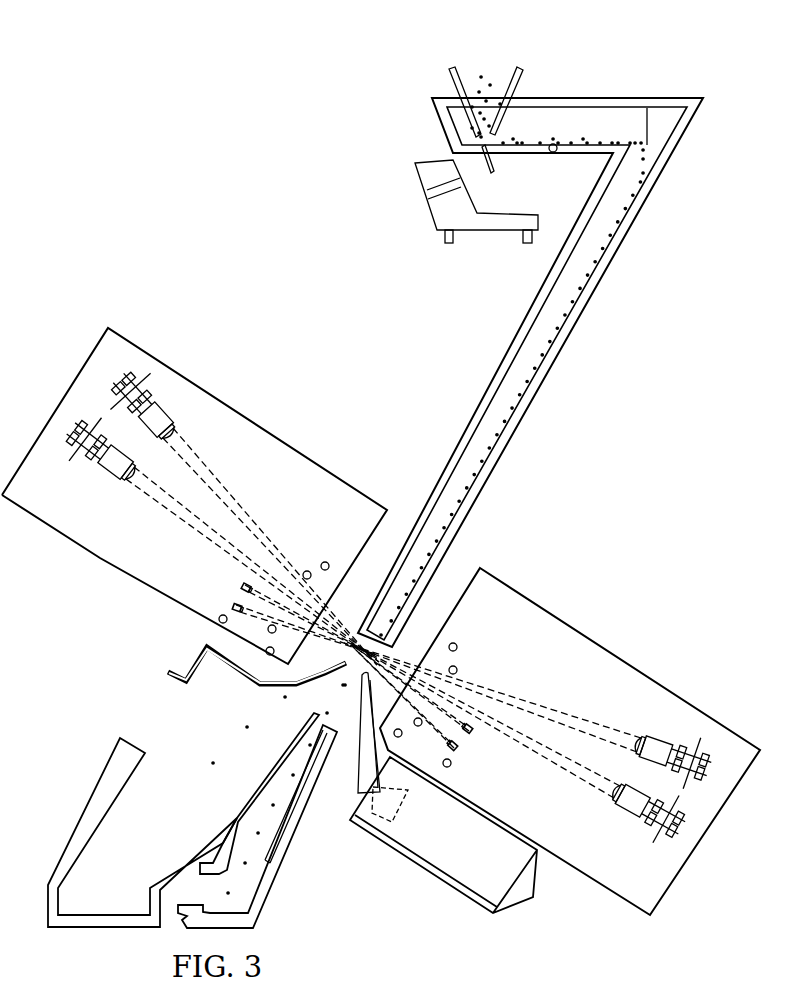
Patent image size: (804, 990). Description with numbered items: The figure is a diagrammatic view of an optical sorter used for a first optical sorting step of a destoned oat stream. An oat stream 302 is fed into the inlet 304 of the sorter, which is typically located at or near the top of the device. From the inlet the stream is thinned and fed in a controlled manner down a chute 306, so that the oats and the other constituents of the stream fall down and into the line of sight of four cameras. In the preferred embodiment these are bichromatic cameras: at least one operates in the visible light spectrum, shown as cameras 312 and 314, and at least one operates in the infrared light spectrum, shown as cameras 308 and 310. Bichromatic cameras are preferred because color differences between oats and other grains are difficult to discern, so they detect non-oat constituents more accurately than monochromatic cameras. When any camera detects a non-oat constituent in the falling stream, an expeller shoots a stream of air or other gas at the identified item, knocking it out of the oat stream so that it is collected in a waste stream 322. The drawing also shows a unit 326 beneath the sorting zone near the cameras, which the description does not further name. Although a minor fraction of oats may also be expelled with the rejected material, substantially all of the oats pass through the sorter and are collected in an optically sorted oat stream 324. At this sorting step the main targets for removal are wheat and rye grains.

The oat stream 302 is at (500, 66).
The inlet 304 is at (582, 124).
The chute 306 is at (549, 376).
The infrared light spectrum camera 308 is at (657, 727).
The infrared light spectrum camera 310 is at (167, 410).
The visible light spectrum camera 312 is at (622, 812).
The visible light spectrum camera 314 is at (112, 483).
The waste stream 322 is at (87, 820).
The optically sorted oat stream 324 is at (275, 888).
The ejector unit 326 is at (515, 902).